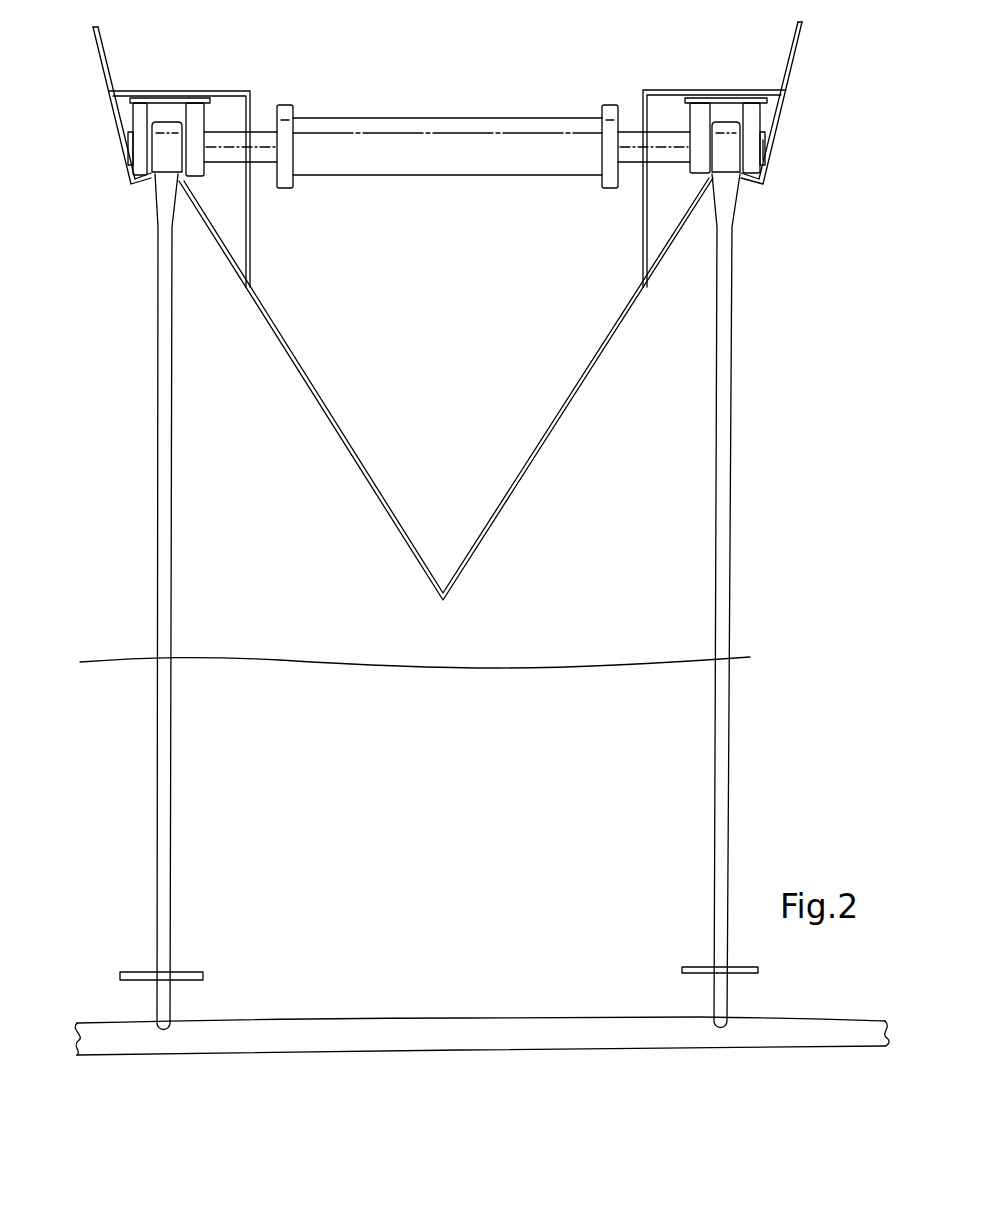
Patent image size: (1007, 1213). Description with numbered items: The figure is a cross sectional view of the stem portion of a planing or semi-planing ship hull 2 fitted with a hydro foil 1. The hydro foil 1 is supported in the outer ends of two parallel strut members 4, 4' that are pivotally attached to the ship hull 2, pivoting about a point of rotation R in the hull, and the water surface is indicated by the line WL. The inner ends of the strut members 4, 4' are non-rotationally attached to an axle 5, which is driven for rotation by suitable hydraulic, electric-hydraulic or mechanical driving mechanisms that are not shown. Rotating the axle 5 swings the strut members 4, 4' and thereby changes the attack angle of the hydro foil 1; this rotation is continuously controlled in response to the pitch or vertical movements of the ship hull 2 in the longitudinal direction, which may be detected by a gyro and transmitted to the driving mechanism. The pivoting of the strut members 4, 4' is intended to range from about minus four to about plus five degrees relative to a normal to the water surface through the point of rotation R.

The hydro foil 1 is at (330, 1025).
The ship hull 2 is at (540, 440).
The strut member 4 is at (734, 601).
The strut member 4' is at (172, 602).
The axle 5 is at (515, 118).
The point of rotation R is at (763, 148).
The water line WL is at (439, 652).